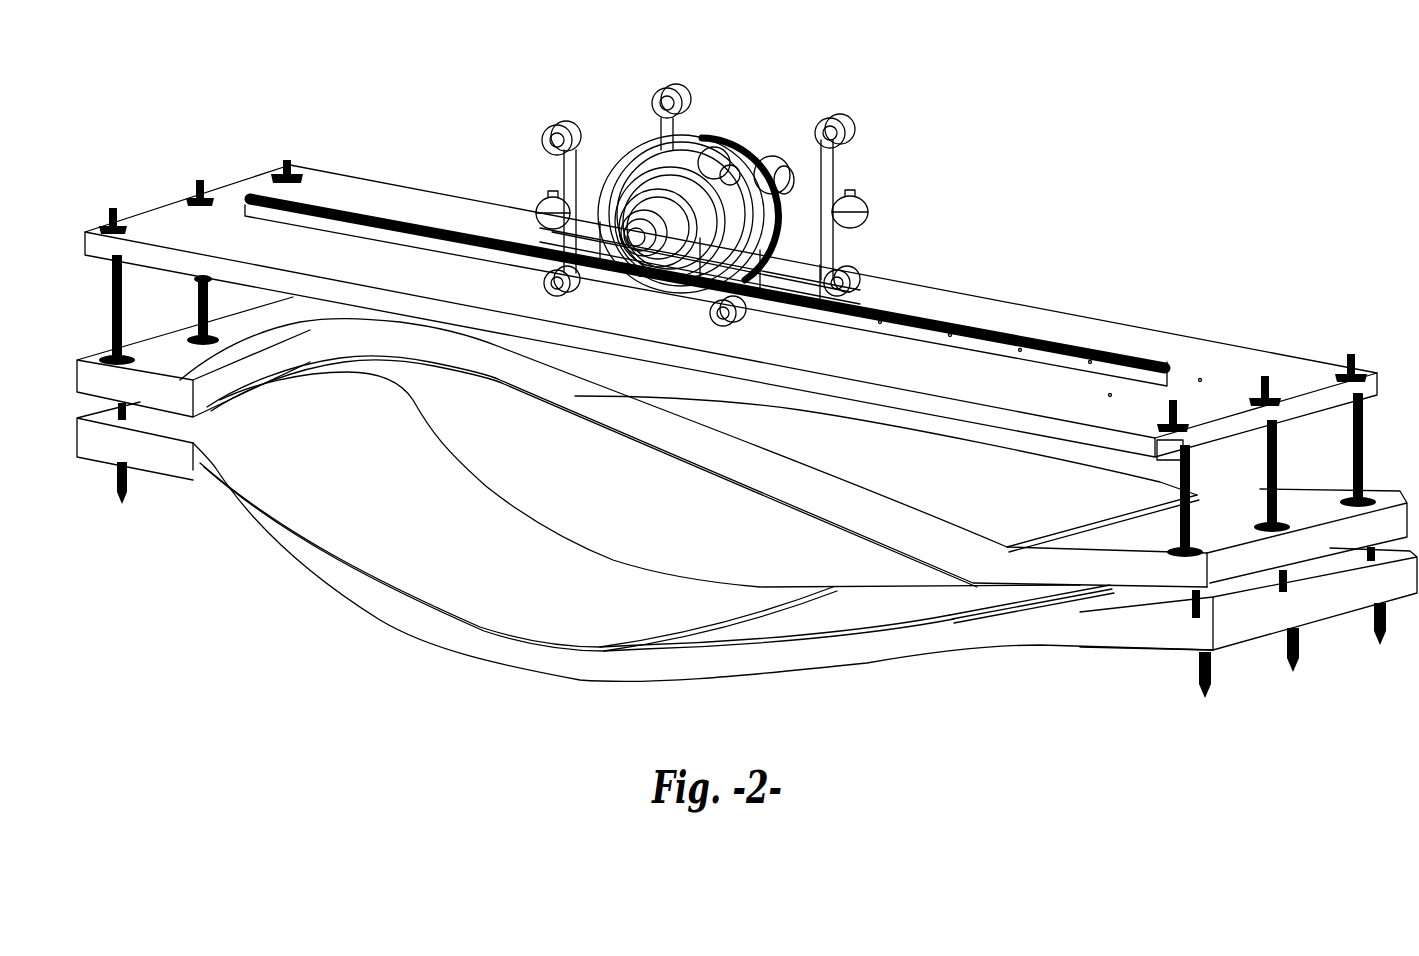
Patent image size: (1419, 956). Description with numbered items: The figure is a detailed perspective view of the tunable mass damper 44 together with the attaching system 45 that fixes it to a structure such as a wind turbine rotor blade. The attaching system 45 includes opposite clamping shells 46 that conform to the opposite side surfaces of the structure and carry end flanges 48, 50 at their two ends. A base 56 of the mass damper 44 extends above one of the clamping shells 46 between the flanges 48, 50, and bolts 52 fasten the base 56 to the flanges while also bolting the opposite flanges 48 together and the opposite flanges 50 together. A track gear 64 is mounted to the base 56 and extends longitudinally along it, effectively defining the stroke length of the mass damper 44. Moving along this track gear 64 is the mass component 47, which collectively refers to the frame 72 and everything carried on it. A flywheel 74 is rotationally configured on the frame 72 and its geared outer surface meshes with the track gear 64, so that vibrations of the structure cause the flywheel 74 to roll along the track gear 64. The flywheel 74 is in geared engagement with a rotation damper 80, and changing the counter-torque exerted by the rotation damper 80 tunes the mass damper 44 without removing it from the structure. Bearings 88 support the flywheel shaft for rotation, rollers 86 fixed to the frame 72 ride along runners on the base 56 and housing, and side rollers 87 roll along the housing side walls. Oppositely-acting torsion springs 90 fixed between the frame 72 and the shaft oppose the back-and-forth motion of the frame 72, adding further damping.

The mass damper 44 is at (217, 110).
The attaching system 45 is at (262, 595).
The clamping shells 46 is at (532, 573).
The mass component 47 is at (985, 222).
The end flanges 48 is at (198, 363).
The end flanges 50 is at (1240, 528).
The bolts 52 is at (111, 296).
The base 56 is at (262, 248).
The track gear 64 is at (313, 203).
The frame 72 is at (593, 247).
The flywheel 74 is at (713, 147).
The rotation damper 80 is at (805, 280).
The rollers 86 is at (540, 138).
The side rollers 87 is at (537, 217).
The bearings 88 is at (770, 162).
The torsion springs 90 is at (620, 153).